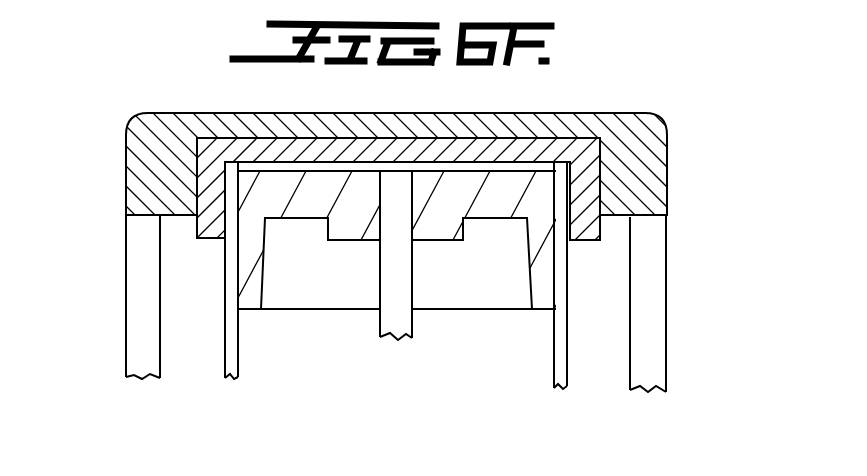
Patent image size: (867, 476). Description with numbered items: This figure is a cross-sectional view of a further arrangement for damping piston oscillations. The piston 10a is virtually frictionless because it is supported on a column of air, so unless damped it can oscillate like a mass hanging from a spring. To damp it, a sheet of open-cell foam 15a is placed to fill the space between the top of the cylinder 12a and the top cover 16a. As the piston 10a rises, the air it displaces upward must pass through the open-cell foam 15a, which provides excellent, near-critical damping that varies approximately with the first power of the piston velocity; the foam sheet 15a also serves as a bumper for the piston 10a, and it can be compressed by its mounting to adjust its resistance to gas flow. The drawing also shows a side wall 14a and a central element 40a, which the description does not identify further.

The top cover 16a is at (653, 182).
The sheet of open-cell foam 15a is at (207, 245).
The side wall 14a is at (657, 295).
The cylinder 12a is at (567, 370).
The piston 10a is at (340, 243).
The central pin 40a is at (370, 334).